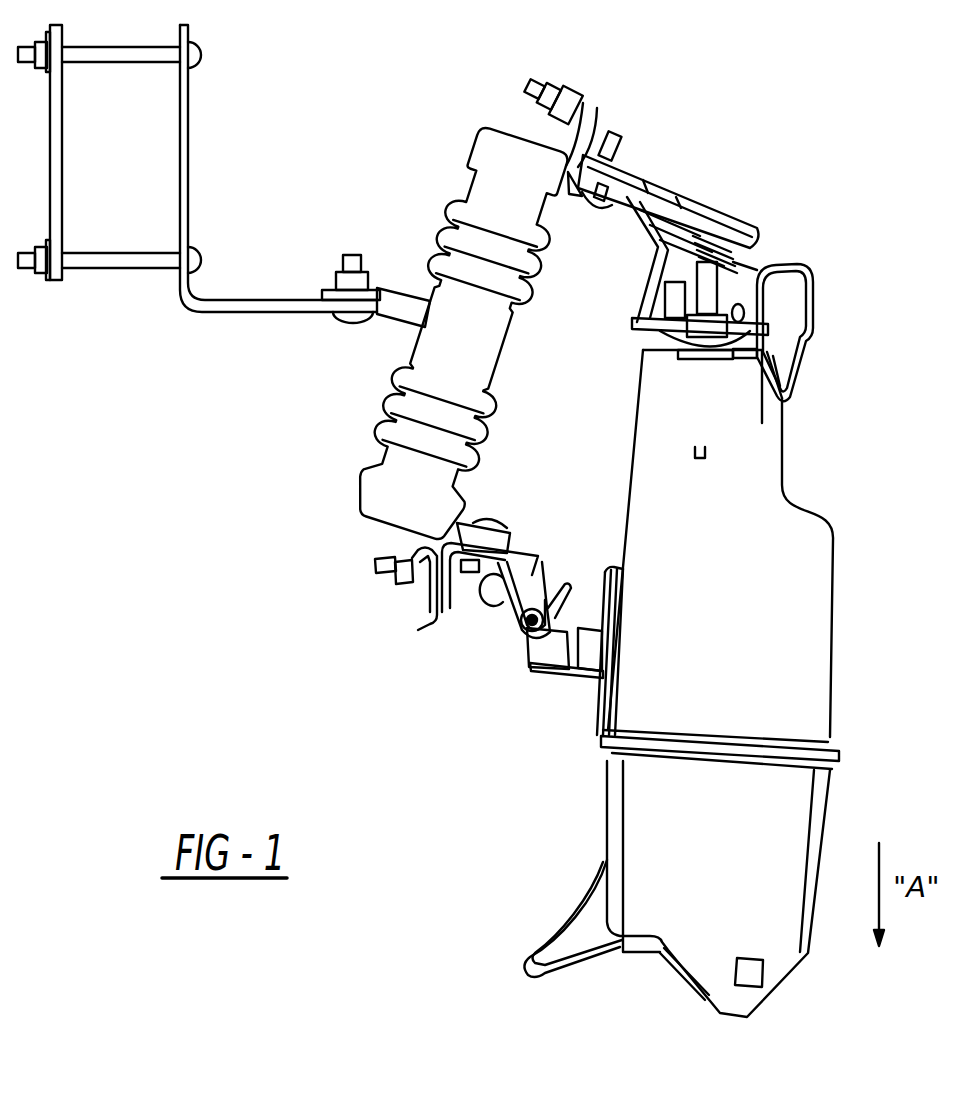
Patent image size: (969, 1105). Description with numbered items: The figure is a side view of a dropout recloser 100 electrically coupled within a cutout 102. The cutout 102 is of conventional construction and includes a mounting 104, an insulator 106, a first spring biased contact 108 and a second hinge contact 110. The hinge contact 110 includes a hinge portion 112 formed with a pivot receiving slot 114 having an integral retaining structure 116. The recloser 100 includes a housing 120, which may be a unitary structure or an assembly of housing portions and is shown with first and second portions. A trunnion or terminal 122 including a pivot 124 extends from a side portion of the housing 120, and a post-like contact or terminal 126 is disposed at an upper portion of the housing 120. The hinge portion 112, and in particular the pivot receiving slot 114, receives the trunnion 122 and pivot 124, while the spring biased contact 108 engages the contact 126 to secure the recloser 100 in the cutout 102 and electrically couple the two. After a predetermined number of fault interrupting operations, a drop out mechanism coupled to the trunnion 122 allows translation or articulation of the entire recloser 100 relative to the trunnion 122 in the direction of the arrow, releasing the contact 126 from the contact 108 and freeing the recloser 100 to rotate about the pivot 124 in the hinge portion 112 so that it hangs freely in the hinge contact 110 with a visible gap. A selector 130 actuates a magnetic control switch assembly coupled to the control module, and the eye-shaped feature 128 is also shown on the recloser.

The dropout recloser 100 is at (767, 683).
The cutout 102 is at (224, 246).
The mounting 104 is at (192, 153).
The insulator 106 is at (357, 500).
The first spring biased contact 108 is at (683, 194).
The second hinge contact 110 is at (425, 640).
The hinge portion 112 is at (527, 650).
The pivot receiving slot 114 is at (527, 620).
The integral retaining structure 116 is at (560, 563).
The housing 120 is at (835, 555).
The trunnion 122 is at (568, 667).
The pivot 124 is at (552, 621).
The post-like contact 126 is at (703, 290).
The pull ring 128 is at (805, 338).
The selector 130 is at (570, 947).